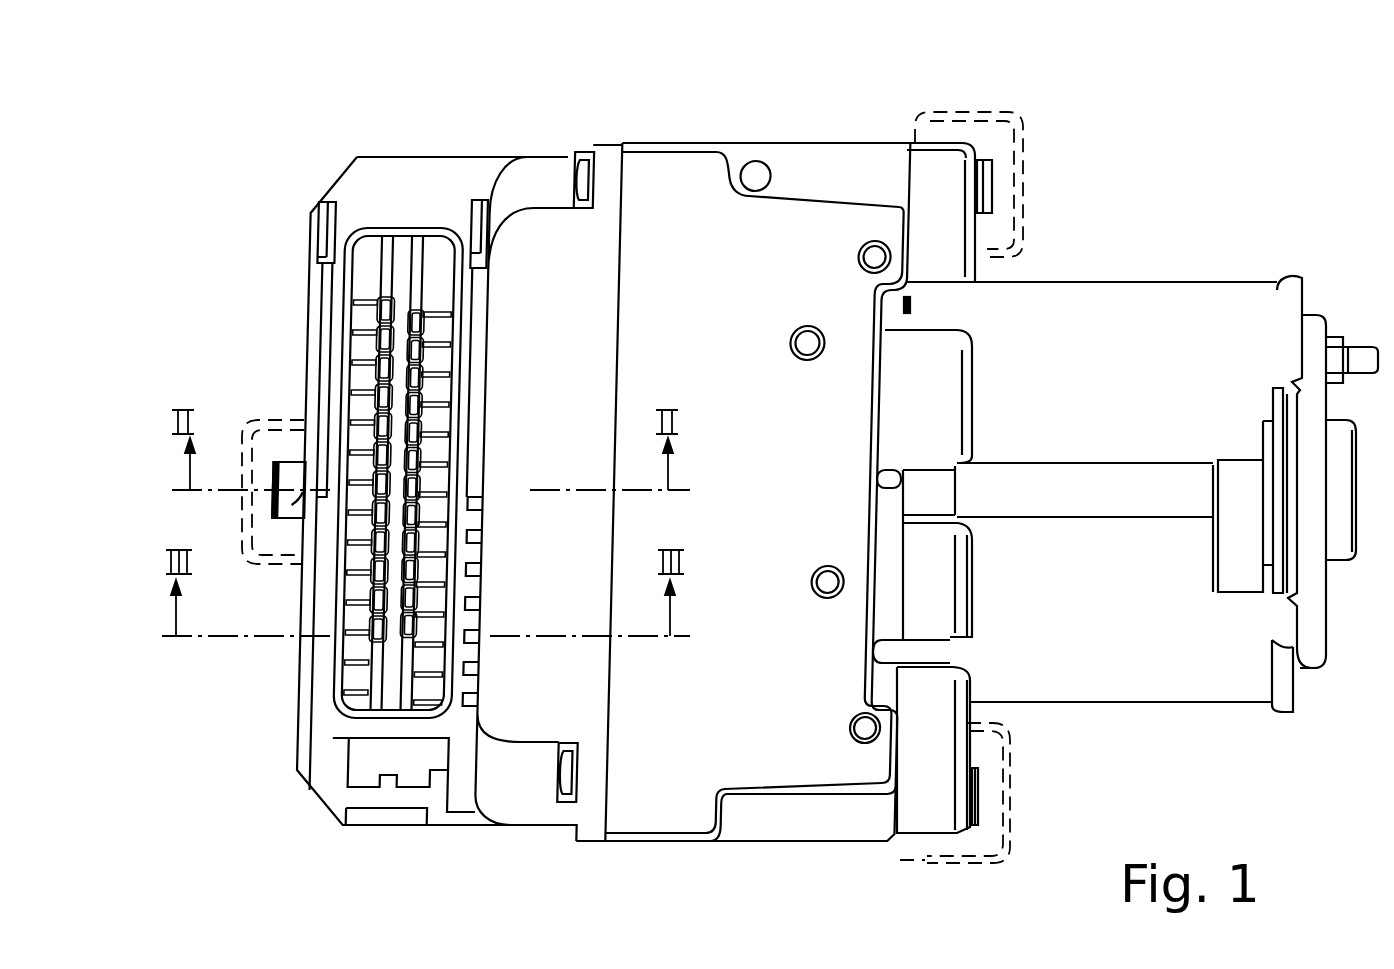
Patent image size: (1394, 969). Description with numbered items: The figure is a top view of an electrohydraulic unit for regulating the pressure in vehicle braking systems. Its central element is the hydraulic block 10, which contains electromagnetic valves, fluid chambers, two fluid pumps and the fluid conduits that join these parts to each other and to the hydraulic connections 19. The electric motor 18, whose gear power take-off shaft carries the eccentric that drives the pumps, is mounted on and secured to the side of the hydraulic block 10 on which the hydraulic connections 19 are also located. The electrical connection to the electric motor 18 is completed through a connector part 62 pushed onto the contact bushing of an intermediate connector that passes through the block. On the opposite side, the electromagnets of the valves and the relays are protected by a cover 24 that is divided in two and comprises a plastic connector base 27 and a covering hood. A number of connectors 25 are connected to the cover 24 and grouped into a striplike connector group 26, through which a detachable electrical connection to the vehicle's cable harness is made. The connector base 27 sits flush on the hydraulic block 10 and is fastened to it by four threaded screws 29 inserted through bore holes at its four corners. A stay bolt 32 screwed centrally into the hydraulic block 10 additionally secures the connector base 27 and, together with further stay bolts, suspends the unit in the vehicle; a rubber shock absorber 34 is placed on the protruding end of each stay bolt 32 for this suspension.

The hydraulic block 10 is at (710, 185).
The electric motor 18 is at (1203, 357).
The hydraulic connections 19 is at (987, 225).
The cover 24 is at (466, 148).
The connectors 25 is at (375, 340).
The connector group 26 is at (360, 640).
The connector base 27 is at (537, 242).
The threaded screws 29 is at (572, 175).
The stay bolt 32 is at (285, 498).
The rubber shock absorber 34 is at (1020, 126).
The connector part 62 is at (950, 487).